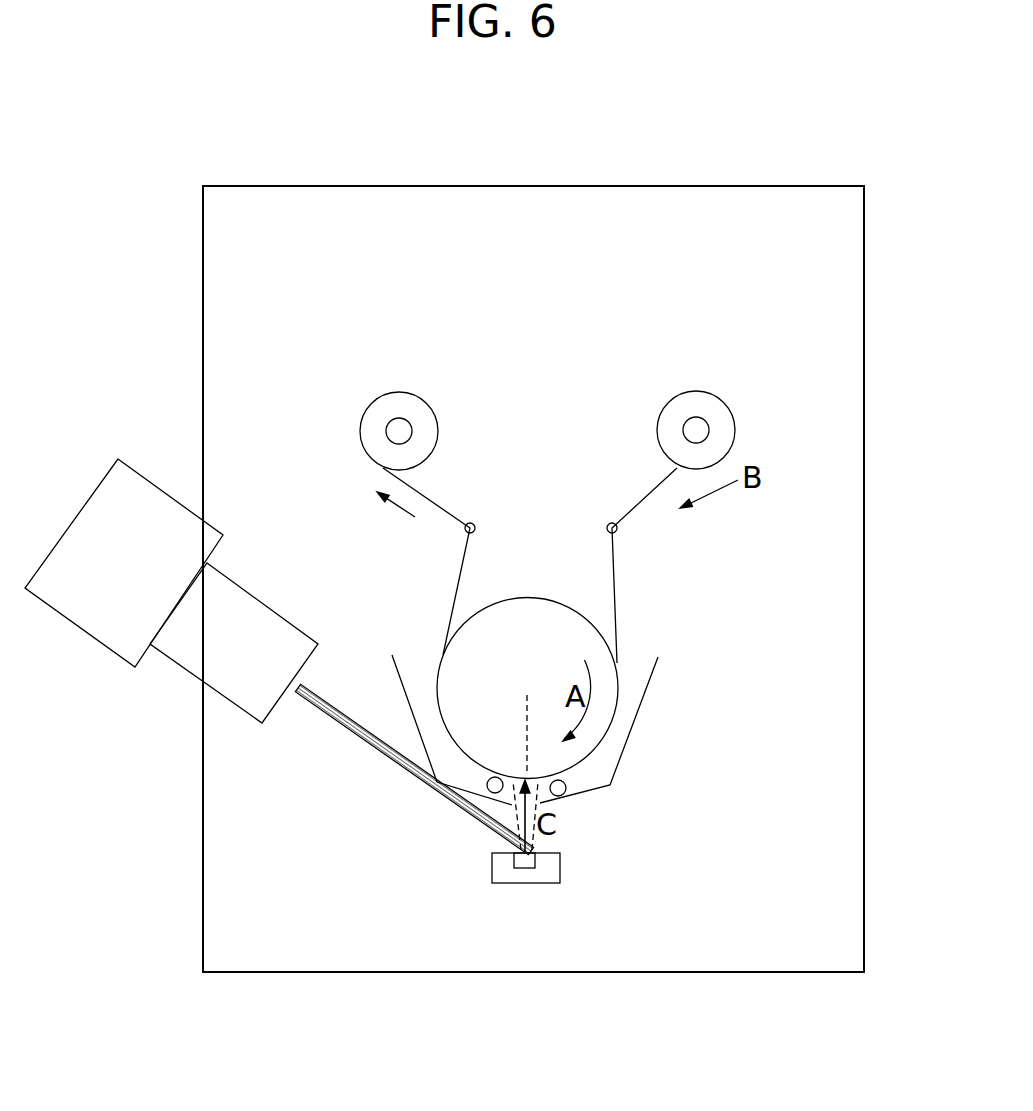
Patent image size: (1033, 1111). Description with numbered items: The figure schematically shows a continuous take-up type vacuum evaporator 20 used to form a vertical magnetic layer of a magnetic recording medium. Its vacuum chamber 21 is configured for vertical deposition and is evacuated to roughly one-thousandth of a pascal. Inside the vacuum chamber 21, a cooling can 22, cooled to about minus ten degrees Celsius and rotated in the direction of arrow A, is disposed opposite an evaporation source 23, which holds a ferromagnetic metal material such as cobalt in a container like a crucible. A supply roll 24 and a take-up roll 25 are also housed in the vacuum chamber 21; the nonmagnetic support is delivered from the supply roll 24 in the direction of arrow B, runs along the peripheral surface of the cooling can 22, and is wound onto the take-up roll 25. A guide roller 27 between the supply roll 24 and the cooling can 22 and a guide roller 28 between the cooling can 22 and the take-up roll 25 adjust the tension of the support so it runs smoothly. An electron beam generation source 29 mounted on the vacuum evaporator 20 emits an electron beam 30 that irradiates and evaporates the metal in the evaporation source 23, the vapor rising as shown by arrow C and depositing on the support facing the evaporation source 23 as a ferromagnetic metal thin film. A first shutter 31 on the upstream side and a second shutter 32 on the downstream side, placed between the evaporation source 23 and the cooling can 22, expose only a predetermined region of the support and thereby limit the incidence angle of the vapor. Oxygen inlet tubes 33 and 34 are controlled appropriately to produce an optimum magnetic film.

The vacuum evaporator 20 is at (576, 510).
The vacuum chamber 21 is at (864, 643).
The cooling can 22 is at (543, 620).
The evaporation source 23 is at (516, 892).
The supply roll 24 is at (726, 423).
The take-up roll 25 is at (428, 412).
The guide roller 27 is at (617, 531).
The guide roller 28 is at (466, 531).
The electron beam generation source 29 is at (128, 649).
The electron beam 30 is at (357, 748).
The first shutter 31 is at (606, 789).
The second shutter 32 is at (496, 794).
The oxygen inlet tube 33 is at (556, 796).
The oxygen inlet tube 34 is at (478, 820).